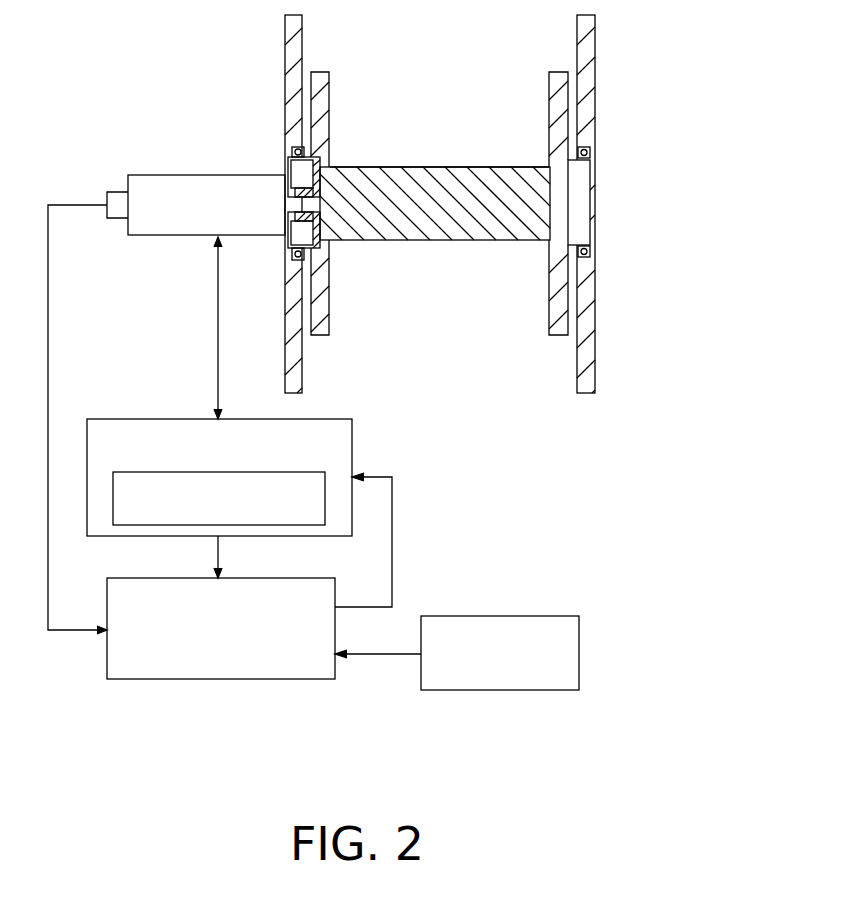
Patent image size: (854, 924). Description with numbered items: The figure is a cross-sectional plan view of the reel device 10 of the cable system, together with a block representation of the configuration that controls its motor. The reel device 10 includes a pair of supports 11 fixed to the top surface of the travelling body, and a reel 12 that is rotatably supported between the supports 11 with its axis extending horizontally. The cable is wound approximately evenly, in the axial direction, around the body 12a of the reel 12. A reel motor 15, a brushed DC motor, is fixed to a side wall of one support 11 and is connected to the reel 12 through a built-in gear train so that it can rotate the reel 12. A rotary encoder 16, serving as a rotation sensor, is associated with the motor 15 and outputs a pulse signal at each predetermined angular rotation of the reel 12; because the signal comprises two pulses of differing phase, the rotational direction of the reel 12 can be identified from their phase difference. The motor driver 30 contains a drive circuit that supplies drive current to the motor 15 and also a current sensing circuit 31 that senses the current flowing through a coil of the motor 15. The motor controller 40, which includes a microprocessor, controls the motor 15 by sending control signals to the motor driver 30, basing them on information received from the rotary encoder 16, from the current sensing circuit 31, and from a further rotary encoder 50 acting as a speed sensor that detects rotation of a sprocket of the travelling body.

The reel device 10 is at (608, 152).
The supports 11 is at (285, 52).
The reel 12 is at (401, 162).
The body of the reel 12a is at (482, 166).
The reel motor 15 is at (207, 175).
The rotary encoder 16 is at (118, 190).
The motor driver 30 is at (352, 432).
The current sensing circuit 31 is at (325, 515).
The motor controller 40 is at (283, 680).
The rotary encoder 50 is at (537, 615).